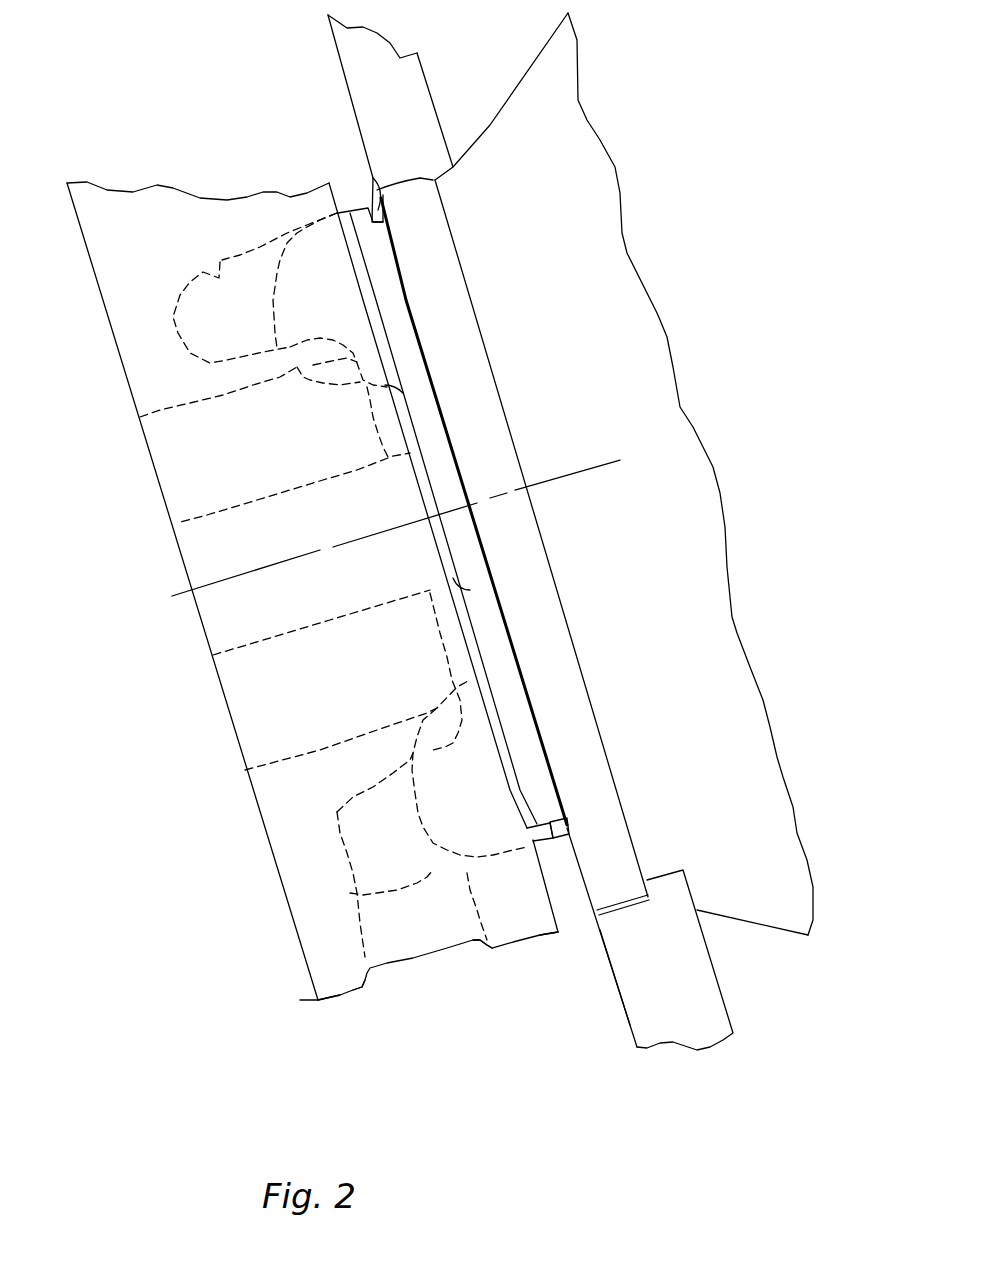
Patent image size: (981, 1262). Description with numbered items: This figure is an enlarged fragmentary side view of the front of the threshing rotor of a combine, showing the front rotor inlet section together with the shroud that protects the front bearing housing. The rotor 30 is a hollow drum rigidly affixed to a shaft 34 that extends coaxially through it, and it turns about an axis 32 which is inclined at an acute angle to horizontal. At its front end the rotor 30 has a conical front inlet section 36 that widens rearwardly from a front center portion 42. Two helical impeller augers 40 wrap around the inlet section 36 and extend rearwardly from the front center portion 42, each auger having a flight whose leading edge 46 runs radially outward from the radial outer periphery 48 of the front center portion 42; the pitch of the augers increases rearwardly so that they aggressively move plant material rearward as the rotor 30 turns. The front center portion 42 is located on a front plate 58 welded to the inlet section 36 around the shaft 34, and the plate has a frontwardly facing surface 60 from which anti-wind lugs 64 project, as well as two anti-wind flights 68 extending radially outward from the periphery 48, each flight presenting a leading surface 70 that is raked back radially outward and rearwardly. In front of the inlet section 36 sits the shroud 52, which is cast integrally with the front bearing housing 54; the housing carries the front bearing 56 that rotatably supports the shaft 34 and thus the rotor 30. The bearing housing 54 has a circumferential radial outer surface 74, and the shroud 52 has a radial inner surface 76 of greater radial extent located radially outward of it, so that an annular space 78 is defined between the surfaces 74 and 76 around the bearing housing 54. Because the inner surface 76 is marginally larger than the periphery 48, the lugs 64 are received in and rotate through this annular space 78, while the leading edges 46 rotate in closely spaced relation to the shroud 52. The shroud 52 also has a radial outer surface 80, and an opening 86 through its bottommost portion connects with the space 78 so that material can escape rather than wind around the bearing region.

The rotor 30 is at (793, 935).
The axis 32 is at (560, 475).
The shaft 34 is at (207, 515).
The front inlet section 36 is at (512, 87).
The helical impeller auger 40 is at (337, 53).
The front center portion 42 is at (362, 272).
The leading edge 46 is at (647, 1008).
The radial outer periphery 48 is at (625, 903).
The shroud 52 is at (333, 1003).
The front bearing housing 54 is at (283, 763).
The front bearing 56 is at (270, 697).
The front plate 58 is at (367, 187).
The frontwardly facing surface 60 is at (478, 647).
The anti-wind lug 64 is at (273, 303).
The anti-wind flight 68 is at (358, 212).
The leading surface 70 is at (537, 830).
The circumferential radial outer surface 74 is at (227, 358).
The radial inner surface 76 is at (218, 262).
The annular space 78 is at (247, 263).
The radial outer surface 80 is at (342, 997).
The opening 86 is at (473, 942).